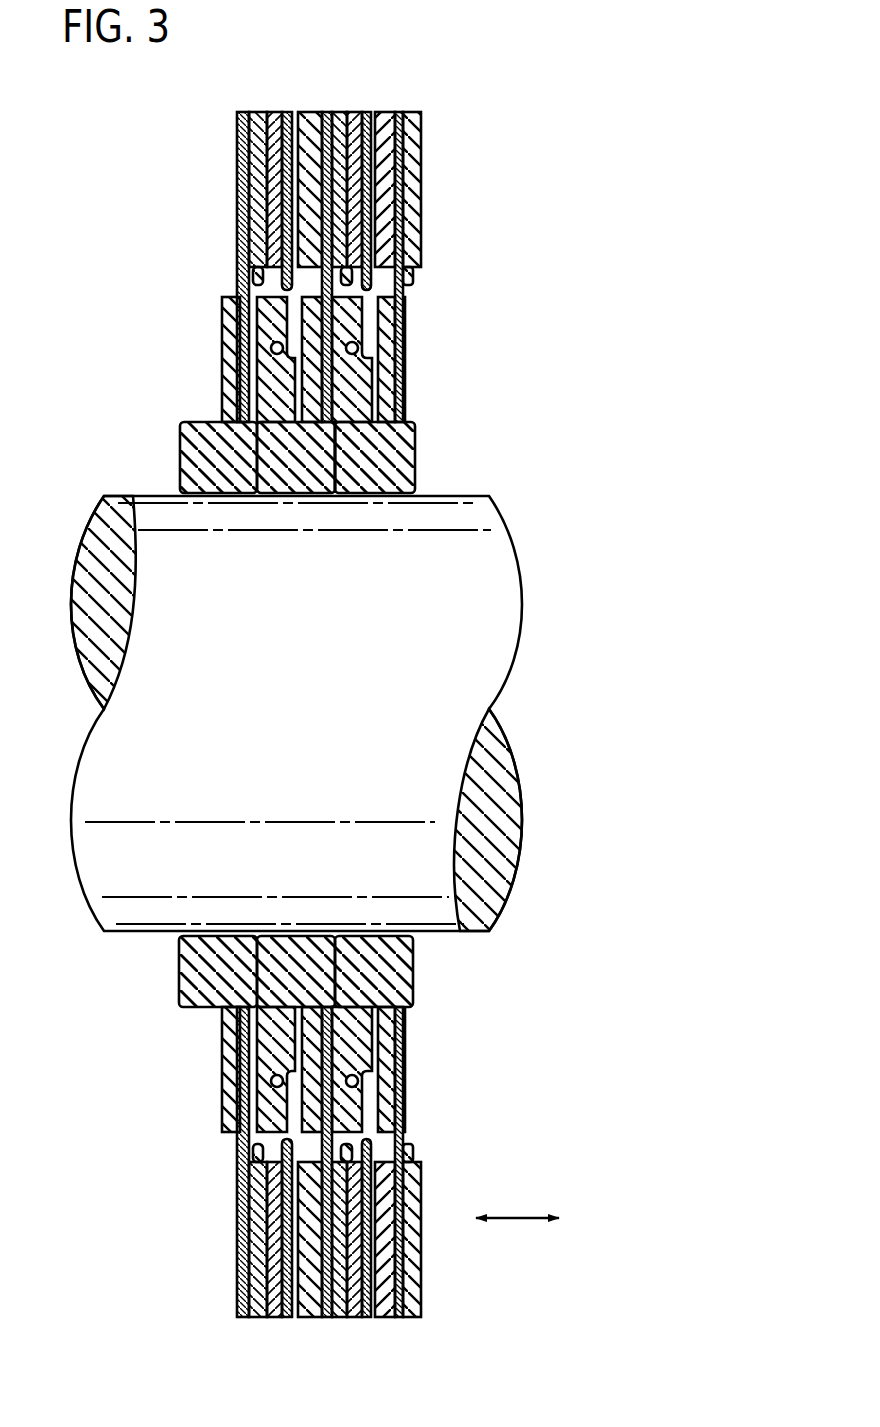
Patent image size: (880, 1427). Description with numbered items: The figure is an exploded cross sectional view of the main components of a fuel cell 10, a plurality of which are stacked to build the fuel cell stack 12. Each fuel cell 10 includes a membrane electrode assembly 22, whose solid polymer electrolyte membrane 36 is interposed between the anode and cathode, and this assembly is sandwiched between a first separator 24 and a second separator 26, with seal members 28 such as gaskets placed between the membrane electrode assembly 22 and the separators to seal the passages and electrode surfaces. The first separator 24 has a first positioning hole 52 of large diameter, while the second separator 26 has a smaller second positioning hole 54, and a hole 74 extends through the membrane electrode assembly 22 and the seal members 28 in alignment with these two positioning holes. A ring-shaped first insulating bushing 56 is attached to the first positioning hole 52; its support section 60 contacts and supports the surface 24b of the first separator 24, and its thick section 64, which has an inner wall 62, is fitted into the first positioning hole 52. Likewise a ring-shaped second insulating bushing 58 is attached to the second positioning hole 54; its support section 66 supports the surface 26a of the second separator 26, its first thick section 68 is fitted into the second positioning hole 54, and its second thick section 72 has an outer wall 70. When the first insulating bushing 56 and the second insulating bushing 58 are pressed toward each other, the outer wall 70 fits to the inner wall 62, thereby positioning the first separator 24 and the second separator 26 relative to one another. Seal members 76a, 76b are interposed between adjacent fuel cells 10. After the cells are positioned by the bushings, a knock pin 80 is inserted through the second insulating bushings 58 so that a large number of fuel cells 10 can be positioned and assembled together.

The fuel cell 10 is at (367, 47).
The fuel cell stack 12 is at (100, 129).
The membrane electrode assembly 22 is at (303, 108).
The first separator 24 is at (287, 108).
The second separator 26 is at (324, 108).
The seal member 28 is at (293, 177).
The solid polymer electrolyte membrane 36 is at (357, 147).
The first positioning hole 52 is at (272, 375).
The second positioning hole 54 is at (335, 437).
The first insulating bushing 56 is at (253, 357).
The second insulating bushing 58 is at (308, 495).
The support section 60 is at (270, 310).
The inner wall 62 is at (280, 427).
The thick section 64 is at (287, 393).
The support section 66 is at (345, 312).
The first thick section 68 is at (332, 440).
The outer wall 70 is at (200, 422).
The second thick section 72 is at (200, 442).
The hole 74 is at (258, 288).
The seal member 76a is at (242, 153).
The seal member 76b is at (270, 210).
The knock pin 80 is at (489, 569).
The surface of the second separator 26a is at (300, 1098).
The surface of the first separator 24b is at (283, 1133).